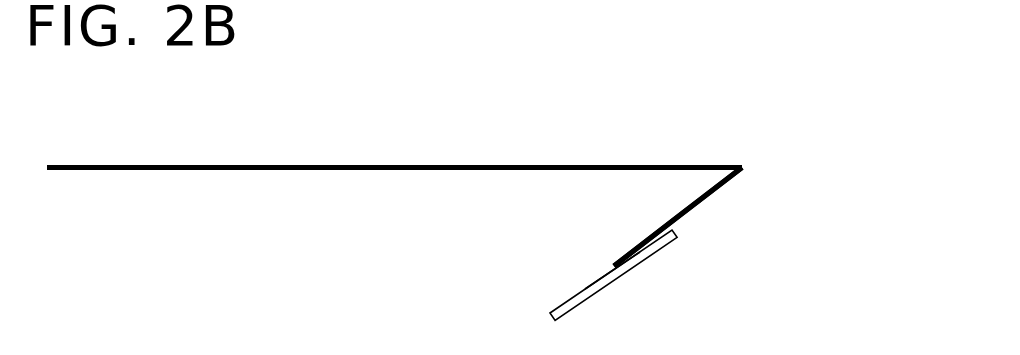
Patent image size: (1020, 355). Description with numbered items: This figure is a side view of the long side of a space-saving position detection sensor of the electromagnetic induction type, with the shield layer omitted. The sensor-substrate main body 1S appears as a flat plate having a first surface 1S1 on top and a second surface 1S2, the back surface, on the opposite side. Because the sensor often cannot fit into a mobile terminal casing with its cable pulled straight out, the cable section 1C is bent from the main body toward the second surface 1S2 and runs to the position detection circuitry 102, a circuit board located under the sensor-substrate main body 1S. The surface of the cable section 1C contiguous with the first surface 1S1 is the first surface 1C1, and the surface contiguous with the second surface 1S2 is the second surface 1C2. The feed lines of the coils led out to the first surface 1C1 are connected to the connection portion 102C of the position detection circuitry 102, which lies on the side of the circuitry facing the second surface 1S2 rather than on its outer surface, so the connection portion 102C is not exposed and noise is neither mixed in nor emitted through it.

The sensor-substrate main body 1S is at (156, 140).
The first surface 1S1 is at (484, 166).
The second surface 1S2 is at (213, 170).
The cable section 1C is at (738, 192).
The first surface of the cable section 1C1 is at (697, 203).
The second surface of the cable section 1C2 is at (637, 245).
The position detection circuitry 102 is at (600, 287).
The connection portion 102C is at (597, 267).